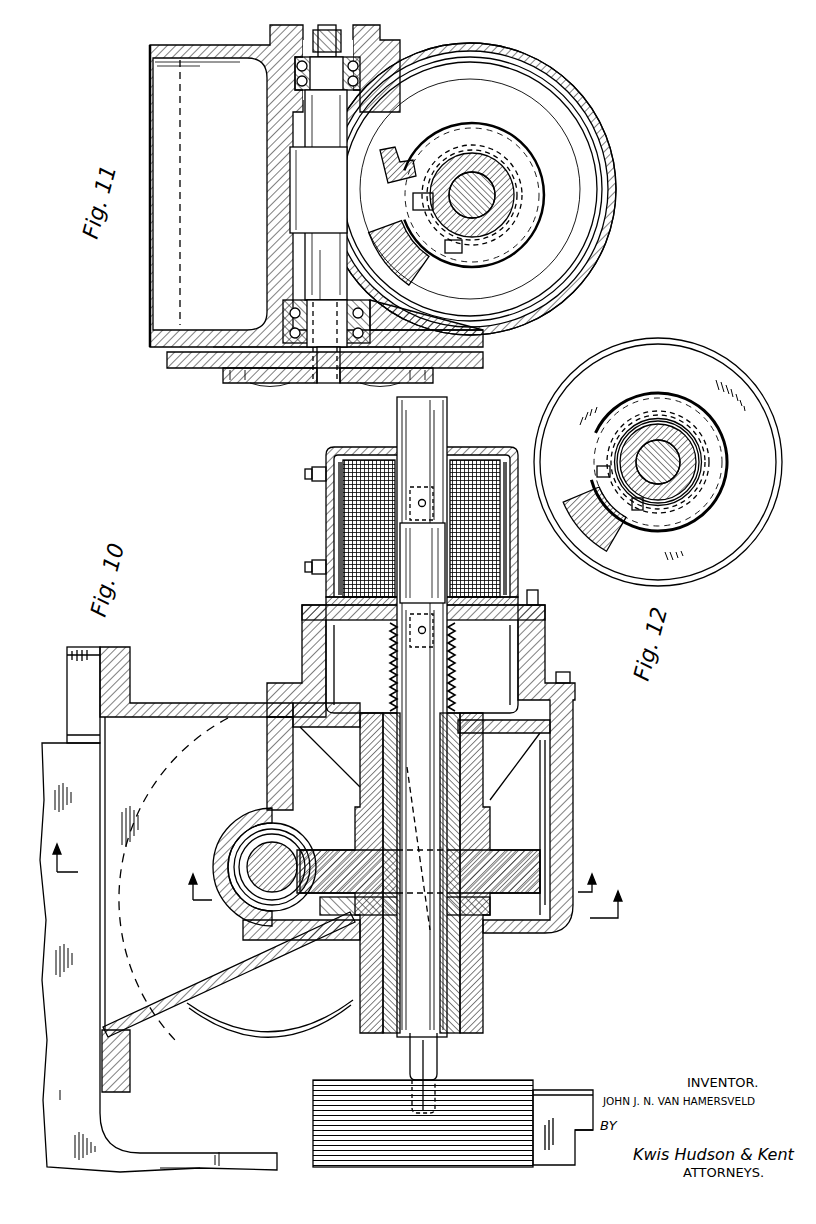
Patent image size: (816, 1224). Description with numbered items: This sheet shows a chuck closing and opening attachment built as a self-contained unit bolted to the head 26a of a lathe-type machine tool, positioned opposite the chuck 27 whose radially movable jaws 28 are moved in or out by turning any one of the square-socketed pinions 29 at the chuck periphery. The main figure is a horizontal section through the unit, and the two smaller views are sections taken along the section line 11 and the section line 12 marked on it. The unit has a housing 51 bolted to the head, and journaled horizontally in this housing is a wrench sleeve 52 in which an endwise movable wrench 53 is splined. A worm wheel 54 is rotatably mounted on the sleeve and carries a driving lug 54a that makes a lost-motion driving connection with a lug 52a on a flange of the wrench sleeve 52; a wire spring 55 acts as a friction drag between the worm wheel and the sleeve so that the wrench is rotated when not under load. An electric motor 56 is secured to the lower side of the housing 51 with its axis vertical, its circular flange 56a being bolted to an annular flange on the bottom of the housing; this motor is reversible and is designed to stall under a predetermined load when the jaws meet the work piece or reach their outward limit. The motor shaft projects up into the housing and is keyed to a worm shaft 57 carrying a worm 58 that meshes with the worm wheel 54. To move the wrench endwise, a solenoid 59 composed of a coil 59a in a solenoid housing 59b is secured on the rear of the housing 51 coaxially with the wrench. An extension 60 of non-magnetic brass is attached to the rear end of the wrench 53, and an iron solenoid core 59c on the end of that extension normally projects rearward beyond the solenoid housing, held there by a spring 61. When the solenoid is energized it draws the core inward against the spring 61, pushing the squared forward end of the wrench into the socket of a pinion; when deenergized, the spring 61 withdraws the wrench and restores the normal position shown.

In FIG. 10, the section line 11- 11 is at (339, 871).
In FIG. 10, the section line 12- 12 is at (386, 875).
In FIG. 10, the head 26a is at (80, 650).
In FIG. 10, the chuck 27 is at (518, 1082).
In FIG. 10, the jaws 28 is at (548, 1092).
In FIG. 10, the square-socketed pinions 29 is at (410, 1078).
In FIG. 11, the housing 51 is at (382, 44).
In FIG. 10, the housing 51 is at (213, 710).
In FIG. 11, the wrench sleeve 52 is at (484, 160).
In FIG. 12, the wrench sleeve 52 is at (640, 425).
In FIG. 10, the wrench sleeve 52 is at (386, 720).
In FIG. 11, the lug 52a is at (386, 150).
In FIG. 10, the lug 52a is at (312, 934).
In FIG. 11, the wrench 53 is at (500, 225).
In FIG. 12, the wrench 53 is at (670, 492).
In FIG. 10, the wrench 53 is at (410, 688).
In FIG. 11, the worm wheel 54 is at (560, 240).
In FIG. 12, the worm wheel 54 is at (670, 350).
In FIG. 10, the worm wheel 54 is at (335, 855).
In FIG. 11, the driving lug 54a is at (420, 262).
In FIG. 12, the driving lug 54a is at (583, 495).
In FIG. 11, the wire spring 55 is at (435, 157).
In FIG. 12, the wire spring 55 is at (617, 440).
In FIG. 10, the wire spring 55 is at (480, 922).
In FIG. 11, the electric motor 56 is at (260, 384).
In FIG. 10, the electric motor 56 is at (262, 1028).
In FIG. 11, the circular flange 56a is at (197, 368).
In FIG. 11, the worm shaft 57 is at (307, 133).
In FIG. 11, the worm 58 is at (290, 203).
In FIG. 10, the solenoid 59 is at (330, 447).
In FIG. 10, the coil 59a is at (355, 497).
In FIG. 10, the solenoid housing 59b is at (328, 533).
In FIG. 10, the solenoid core 59c is at (405, 432).
In FIG. 10, the extension 60 is at (422, 567).
In FIG. 10, the spring 61 is at (456, 655).